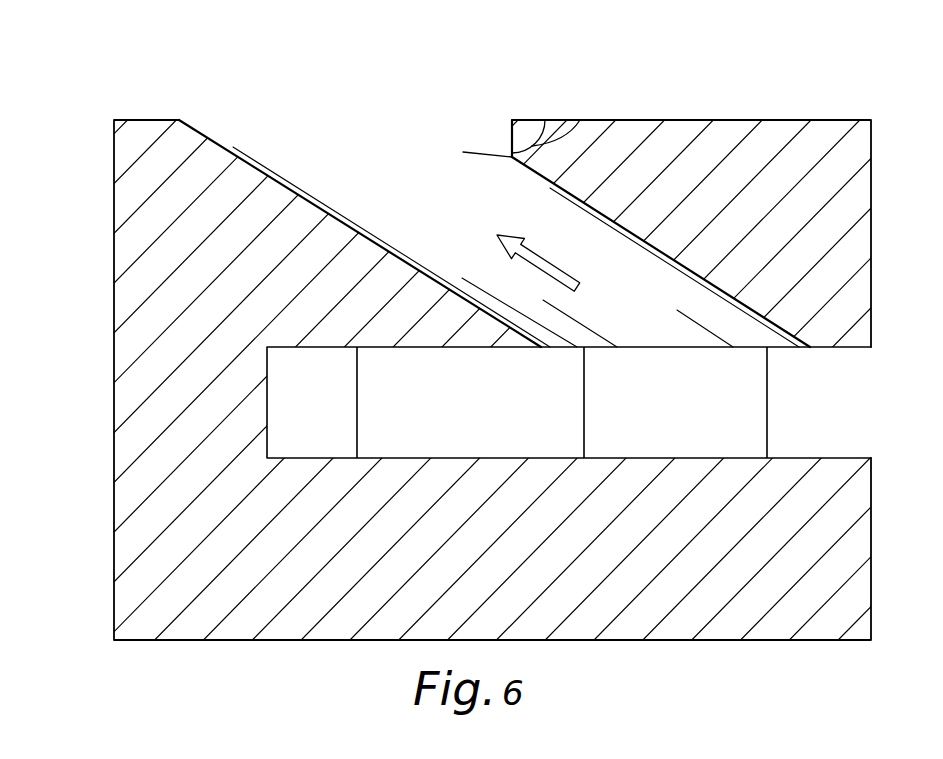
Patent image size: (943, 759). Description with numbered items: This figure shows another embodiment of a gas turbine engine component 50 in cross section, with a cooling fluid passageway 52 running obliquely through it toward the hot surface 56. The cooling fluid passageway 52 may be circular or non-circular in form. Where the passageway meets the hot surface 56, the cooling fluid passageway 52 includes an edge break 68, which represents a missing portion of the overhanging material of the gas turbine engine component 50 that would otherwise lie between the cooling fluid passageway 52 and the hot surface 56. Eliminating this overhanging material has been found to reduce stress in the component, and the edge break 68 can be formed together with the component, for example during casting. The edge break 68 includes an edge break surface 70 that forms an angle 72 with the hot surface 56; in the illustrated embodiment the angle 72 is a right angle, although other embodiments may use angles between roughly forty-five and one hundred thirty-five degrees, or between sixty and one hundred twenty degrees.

The gas turbine engine component 50 is at (90, 105).
The cooling fluid passageway 52 is at (333, 222).
The hot surface 56 is at (722, 120).
The edge break 68 is at (484, 92).
The edge break surface 70 is at (512, 136).
The angle 72 is at (581, 120).